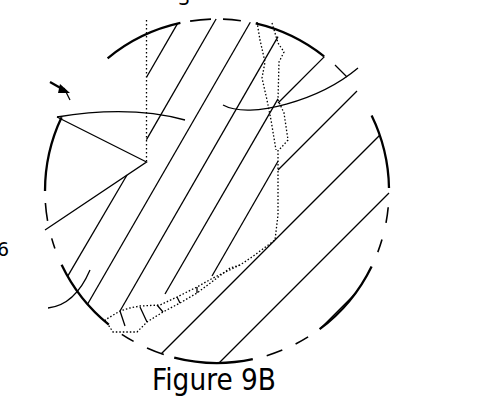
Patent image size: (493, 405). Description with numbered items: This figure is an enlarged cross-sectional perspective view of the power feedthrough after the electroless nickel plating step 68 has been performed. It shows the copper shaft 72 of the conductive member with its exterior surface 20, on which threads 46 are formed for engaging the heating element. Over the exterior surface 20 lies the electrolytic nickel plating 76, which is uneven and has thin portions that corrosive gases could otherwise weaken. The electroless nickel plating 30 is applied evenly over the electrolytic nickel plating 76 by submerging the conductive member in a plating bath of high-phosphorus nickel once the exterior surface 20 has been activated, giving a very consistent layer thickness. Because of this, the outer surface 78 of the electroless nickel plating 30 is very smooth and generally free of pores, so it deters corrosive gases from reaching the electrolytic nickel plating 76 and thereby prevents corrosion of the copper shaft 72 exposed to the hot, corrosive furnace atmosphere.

The exterior surface 20 is at (107, 85).
The electroless nickel plating 30 is at (61, 118).
The threads 46 is at (75, 183).
The electroless nickel plating step 68 is at (49, 81).
The copper shaft 72 is at (347, 115).
The electrolytic nickel plating 76 is at (270, 52).
The outer surface 78 is at (203, 183).